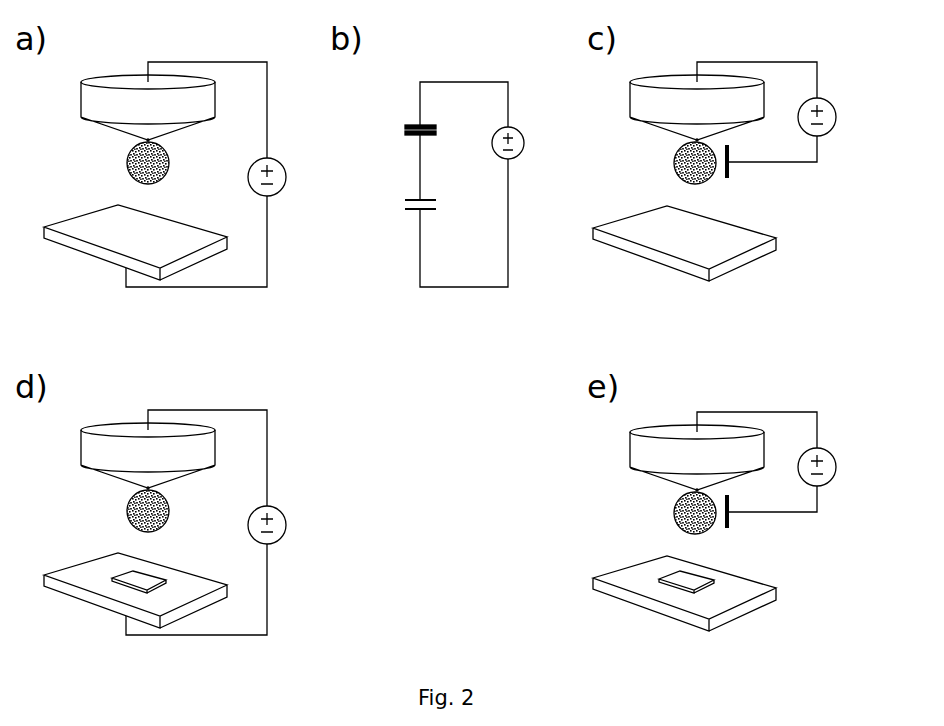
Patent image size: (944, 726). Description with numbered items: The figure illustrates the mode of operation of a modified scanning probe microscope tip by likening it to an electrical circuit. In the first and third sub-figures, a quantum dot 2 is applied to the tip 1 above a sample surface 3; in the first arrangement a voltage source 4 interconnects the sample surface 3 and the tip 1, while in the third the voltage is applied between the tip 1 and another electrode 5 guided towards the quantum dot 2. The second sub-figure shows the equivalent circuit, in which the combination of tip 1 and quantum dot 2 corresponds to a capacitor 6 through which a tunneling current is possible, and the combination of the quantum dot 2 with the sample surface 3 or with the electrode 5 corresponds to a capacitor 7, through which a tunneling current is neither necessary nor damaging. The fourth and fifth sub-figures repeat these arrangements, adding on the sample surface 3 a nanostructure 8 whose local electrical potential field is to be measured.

In FIG. 2a, the tip 1 is at (100, 107).
In FIG. 2c, the tip 1 is at (648, 107).
In FIG. 2d, the tip 1 is at (124, 461).
In FIG. 2e, the tip 1 is at (673, 463).
In FIG. 2a, the quantum dot 2 is at (128, 165).
In FIG. 2c, the quantum dot 2 is at (675, 166).
In FIG. 2d, the quantum dot 2 is at (120, 511).
In FIG. 2e, the quantum dot 2 is at (667, 513).
In FIG. 2a, the sample surface 3 is at (97, 232).
In FIG. 2c, the sample surface 3 is at (643, 232).
In FIG. 2d, the sample surface 3 is at (127, 577).
In FIG. 2e, the sample surface 3 is at (674, 579).
In FIG. 2a, the voltage source 4 is at (248, 177).
In FIG. 2b, the voltage source 4 is at (495, 134).
In FIG. 2c, the voltage source 4 is at (825, 124).
In FIG. 2d, the voltage source 4 is at (252, 525).
In FIG. 2e, the voltage source 4 is at (832, 489).
In FIG. 2c, the electrode 5 is at (735, 172).
In FIG. 2e, the electrode 5 is at (762, 525).
In FIG. 2a, the capacitor 6 is at (150, 140).
In FIG. 2b, the capacitor 6 is at (408, 127).
In FIG. 2c, the capacitor 6 is at (694, 146).
In FIG. 2d, the capacitor 6 is at (184, 485).
In FIG. 2e, the capacitor 6 is at (666, 490).
In FIG. 2a, the capacitor 7 is at (150, 203).
In FIG. 2b, the capacitor 7 is at (408, 204).
In FIG. 2c, the capacitor 7 is at (720, 178).
In FIG. 2d, the capacitor 7 is at (181, 552).
In FIG. 2e, the capacitor 7 is at (711, 547).
In FIG. 2d, the nanostructure 8 is at (102, 606).
In FIG. 2e, the nanostructure 8 is at (648, 606).